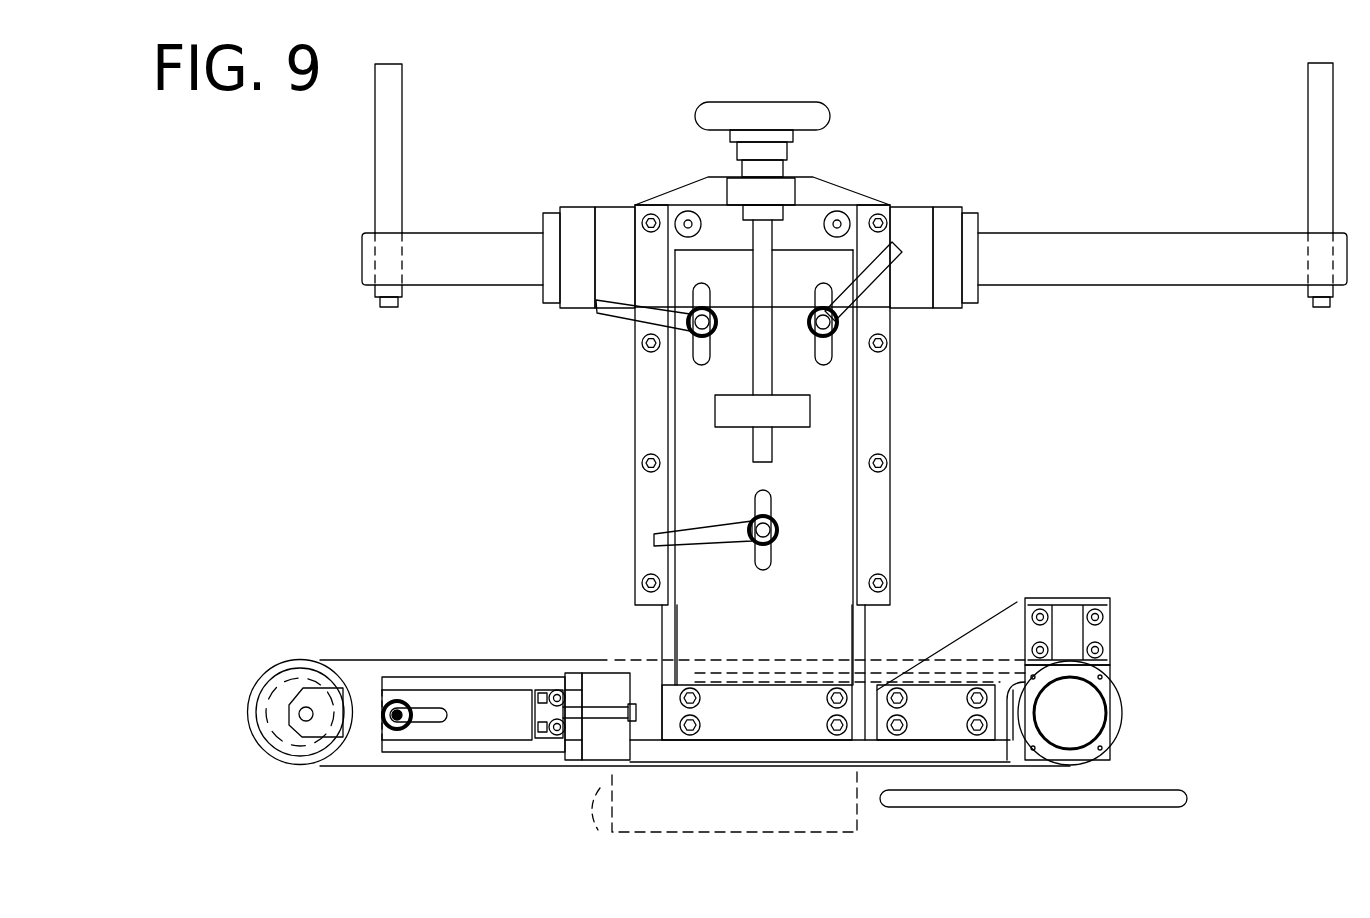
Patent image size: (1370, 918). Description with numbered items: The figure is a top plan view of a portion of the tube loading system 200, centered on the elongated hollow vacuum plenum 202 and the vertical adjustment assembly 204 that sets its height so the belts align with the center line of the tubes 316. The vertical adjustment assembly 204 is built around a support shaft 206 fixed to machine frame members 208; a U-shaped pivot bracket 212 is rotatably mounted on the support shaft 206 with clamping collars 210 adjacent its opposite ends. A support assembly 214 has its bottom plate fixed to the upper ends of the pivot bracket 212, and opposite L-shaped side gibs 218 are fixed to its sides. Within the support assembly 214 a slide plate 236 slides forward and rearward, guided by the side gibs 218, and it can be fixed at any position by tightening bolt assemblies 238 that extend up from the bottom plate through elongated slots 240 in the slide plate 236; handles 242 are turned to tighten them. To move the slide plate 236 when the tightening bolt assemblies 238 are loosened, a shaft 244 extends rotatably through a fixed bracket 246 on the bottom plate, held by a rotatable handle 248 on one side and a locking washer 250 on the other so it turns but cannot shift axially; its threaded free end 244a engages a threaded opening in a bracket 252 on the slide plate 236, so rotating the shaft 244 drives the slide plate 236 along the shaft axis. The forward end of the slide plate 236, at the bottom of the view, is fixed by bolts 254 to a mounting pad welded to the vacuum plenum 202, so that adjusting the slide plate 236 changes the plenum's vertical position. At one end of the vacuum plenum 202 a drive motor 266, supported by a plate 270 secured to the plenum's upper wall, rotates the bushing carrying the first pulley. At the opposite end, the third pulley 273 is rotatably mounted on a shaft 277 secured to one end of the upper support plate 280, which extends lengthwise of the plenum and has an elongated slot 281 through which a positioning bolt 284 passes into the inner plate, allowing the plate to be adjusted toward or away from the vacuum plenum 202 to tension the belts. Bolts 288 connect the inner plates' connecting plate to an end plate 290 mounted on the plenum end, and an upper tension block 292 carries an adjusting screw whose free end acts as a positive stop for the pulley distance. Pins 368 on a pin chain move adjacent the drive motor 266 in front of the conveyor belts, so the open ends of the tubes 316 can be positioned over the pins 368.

The tube loading system 200 is at (1182, 509).
The vacuum plenum 202 is at (607, 688).
The vertical adjustment assembly 204 is at (601, 475).
The support shaft 206 is at (460, 242).
The machine frame members 208 is at (402, 93).
The clamping collars 210 is at (546, 223).
The U-shaped pivot bracket 212 is at (589, 222).
The support assembly 214 is at (896, 400).
The L-shaped side gibs 218 is at (643, 426).
The slide plate 236 is at (812, 553).
The tightening bolt assemblies 238 is at (690, 343).
The elongated slots 240 is at (707, 286).
The handles 242 is at (610, 312).
The shaft 244 is at (775, 278).
The free end 244a is at (775, 450).
The fixed bracket 246 is at (787, 186).
The rotatable handle 248 is at (727, 113).
The locking washer 250 is at (750, 213).
The bracket 252 is at (728, 407).
The bolts 254 is at (690, 728).
The drive motor 266 is at (1083, 710).
The plate 270 is at (993, 636).
The third pulley 273 is at (260, 743).
The shaft 277 is at (293, 702).
The upper support plate 280 is at (367, 738).
The elongated slot 281 is at (433, 707).
The positioning bolts 284 is at (397, 725).
The bolts 288 is at (535, 725).
The end plate 290 is at (572, 686).
The upper tension block 292 is at (555, 688).
The tubes 316 is at (807, 832).
The pins 368 is at (945, 808).